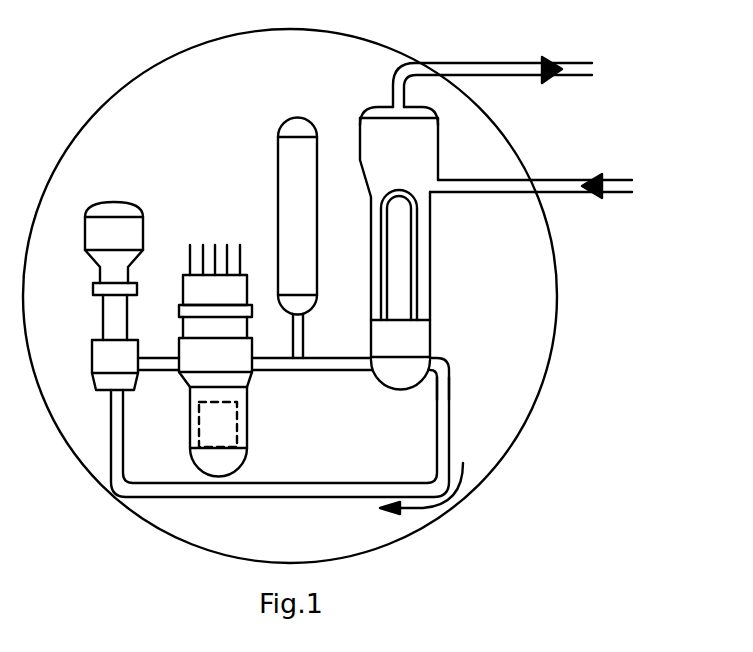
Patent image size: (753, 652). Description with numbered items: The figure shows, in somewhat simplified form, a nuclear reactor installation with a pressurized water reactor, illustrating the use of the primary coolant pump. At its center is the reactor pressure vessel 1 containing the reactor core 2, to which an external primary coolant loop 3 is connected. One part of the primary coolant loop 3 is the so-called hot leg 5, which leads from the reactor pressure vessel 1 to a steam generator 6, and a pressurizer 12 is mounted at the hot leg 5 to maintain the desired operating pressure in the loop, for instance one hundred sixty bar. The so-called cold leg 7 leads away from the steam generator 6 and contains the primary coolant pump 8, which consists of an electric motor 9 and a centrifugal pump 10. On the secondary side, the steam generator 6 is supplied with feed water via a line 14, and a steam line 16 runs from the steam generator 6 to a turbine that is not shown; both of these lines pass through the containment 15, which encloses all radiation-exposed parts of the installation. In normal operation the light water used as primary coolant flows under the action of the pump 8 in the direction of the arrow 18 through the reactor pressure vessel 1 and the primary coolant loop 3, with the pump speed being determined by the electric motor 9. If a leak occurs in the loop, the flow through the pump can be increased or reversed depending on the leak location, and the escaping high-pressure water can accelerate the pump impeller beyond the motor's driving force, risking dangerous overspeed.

The reactor pressure vessel 1 is at (247, 413).
The reactor core 2 is at (217, 422).
The primary coolant loop 3 is at (308, 434).
The hot leg 5 is at (333, 357).
The steam generator 6 is at (428, 285).
The cold leg 7 is at (450, 407).
The primary coolant pump 8 is at (137, 232).
The electric motor 9 is at (87, 236).
The centrifugal pump 10 is at (91, 355).
The pressurizer 12 is at (288, 123).
The line 14 is at (549, 180).
The containment 15 is at (547, 361).
The steam line 16 is at (473, 63).
The arrow 18 is at (422, 508).